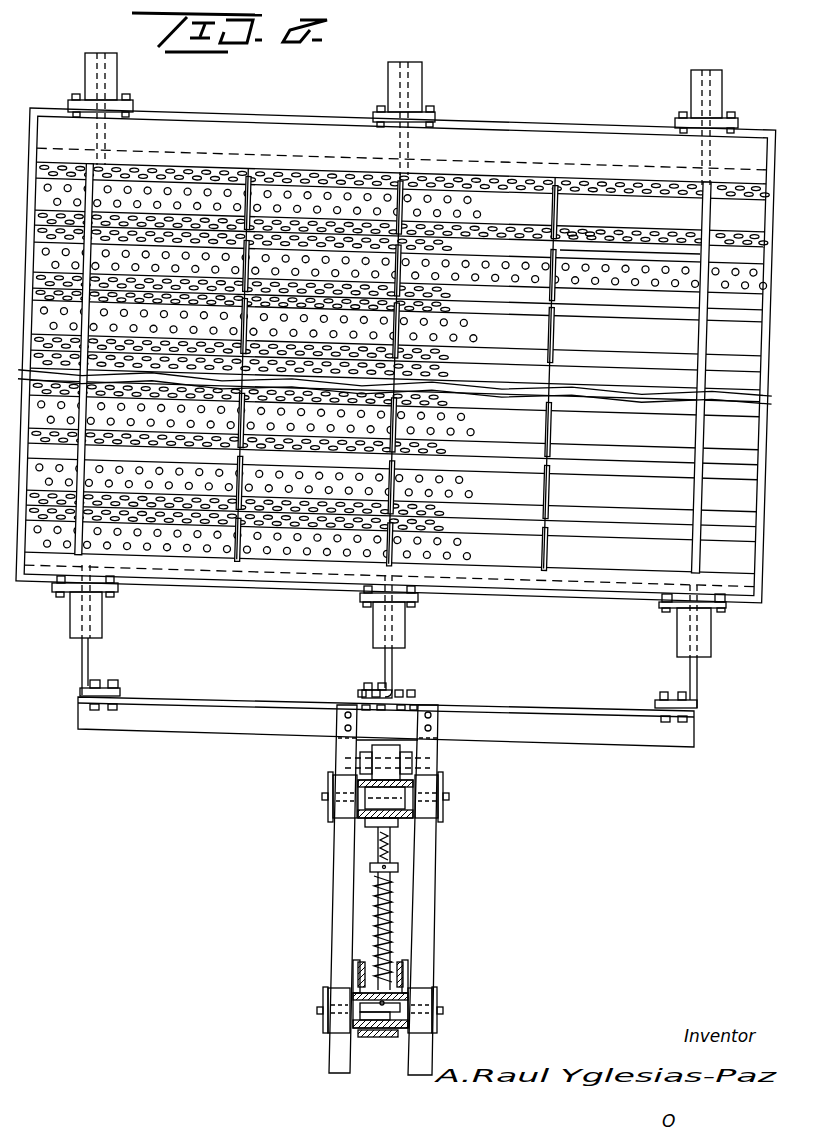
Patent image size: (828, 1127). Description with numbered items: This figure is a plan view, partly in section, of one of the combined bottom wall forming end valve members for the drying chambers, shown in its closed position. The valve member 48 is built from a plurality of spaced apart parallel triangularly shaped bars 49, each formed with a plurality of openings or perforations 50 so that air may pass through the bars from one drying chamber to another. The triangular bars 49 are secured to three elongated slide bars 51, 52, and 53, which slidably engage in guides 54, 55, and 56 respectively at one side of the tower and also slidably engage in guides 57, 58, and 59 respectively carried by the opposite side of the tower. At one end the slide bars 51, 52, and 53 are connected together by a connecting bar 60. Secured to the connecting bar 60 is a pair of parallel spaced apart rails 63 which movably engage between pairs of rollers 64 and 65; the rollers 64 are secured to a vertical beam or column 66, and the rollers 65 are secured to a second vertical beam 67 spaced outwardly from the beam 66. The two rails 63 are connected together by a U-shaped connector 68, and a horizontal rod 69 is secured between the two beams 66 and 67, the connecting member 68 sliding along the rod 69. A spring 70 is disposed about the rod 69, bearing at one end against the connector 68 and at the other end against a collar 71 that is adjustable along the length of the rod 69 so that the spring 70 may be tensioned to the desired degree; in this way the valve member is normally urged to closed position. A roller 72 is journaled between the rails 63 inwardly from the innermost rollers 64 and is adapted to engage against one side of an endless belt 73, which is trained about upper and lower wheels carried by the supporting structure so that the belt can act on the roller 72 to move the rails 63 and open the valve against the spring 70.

The valve member 48 is at (621, 327).
The triangularly shaped bars 49 is at (610, 224).
The openings or perforations 50 is at (575, 232).
The slide bar 51 is at (88, 660).
The slide bar 52 is at (385, 665).
The slide bar 53 is at (690, 668).
The guide 54 is at (85, 62).
The guide 55 is at (418, 80).
The guide 56 is at (691, 81).
The guide 57 is at (75, 642).
The guide 58 is at (373, 618).
The guide 59 is at (677, 622).
The connecting bar 60 is at (215, 722).
The rails 63 is at (338, 871).
The rollers 64 is at (338, 806).
The rollers 65 is at (430, 1000).
The vertical beam or column 66 is at (414, 814).
The second vertical beam 67 is at (403, 1035).
The U-shaped connector 68 is at (358, 948).
The horizontal rod 69 is at (400, 866).
The spring 70 is at (390, 921).
The collar 71 is at (370, 862).
The roller 72 is at (388, 752).
The endless belt 73 is at (415, 782).